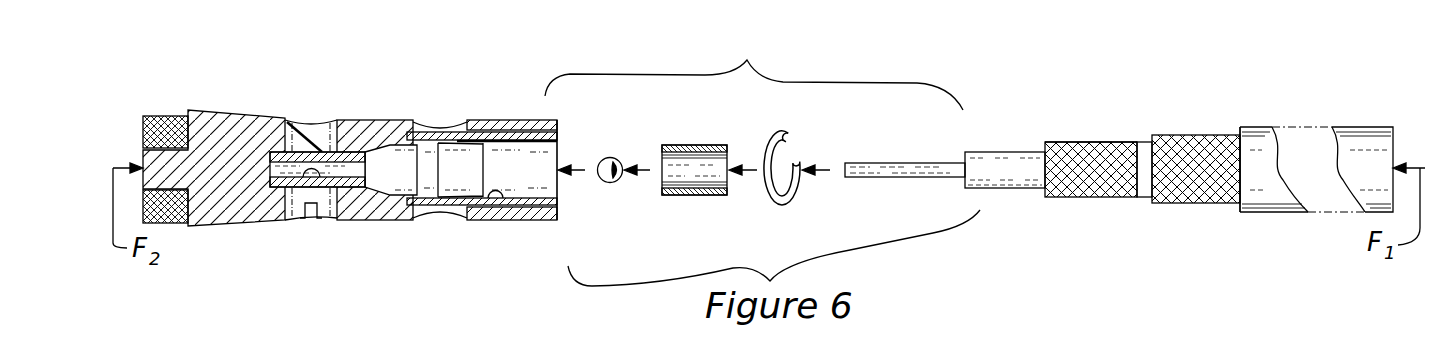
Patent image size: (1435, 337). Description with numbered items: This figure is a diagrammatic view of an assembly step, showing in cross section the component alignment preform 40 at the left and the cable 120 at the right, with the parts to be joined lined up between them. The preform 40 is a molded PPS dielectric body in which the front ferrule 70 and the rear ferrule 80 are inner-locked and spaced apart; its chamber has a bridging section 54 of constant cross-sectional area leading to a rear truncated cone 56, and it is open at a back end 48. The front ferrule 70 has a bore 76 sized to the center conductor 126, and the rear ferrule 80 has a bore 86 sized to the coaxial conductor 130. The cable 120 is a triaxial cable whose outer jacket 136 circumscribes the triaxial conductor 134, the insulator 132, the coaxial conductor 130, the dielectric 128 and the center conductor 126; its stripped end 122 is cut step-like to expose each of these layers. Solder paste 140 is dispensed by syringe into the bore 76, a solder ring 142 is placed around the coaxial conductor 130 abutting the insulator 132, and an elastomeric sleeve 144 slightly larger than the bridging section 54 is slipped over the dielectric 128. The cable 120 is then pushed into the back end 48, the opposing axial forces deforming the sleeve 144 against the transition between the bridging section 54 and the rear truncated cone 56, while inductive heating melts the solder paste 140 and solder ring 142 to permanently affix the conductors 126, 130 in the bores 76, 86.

The component alignment preform 40 is at (348, 90).
The back end 48 is at (558, 123).
The bridging section 54 is at (423, 165).
The rear truncated cone 56 is at (455, 150).
The front ferrule 70 is at (295, 220).
The bore 76 is at (321, 219).
The rear ferrule 80 is at (527, 206).
The bore 86 is at (498, 193).
The cable 120 is at (1328, 88).
The stripped end 122 is at (1019, 142).
The center conductor 126 is at (925, 163).
The dielectric 128 is at (982, 157).
The coaxial conductor 130 is at (1085, 185).
The insulator 132 is at (1143, 185).
The triaxial conductor 134 is at (1190, 201).
The outer jacket 136 is at (1250, 135).
The solder paste 140 is at (616, 182).
The solder ring 142 is at (791, 201).
The elastomeric sleeve 144 is at (680, 145).